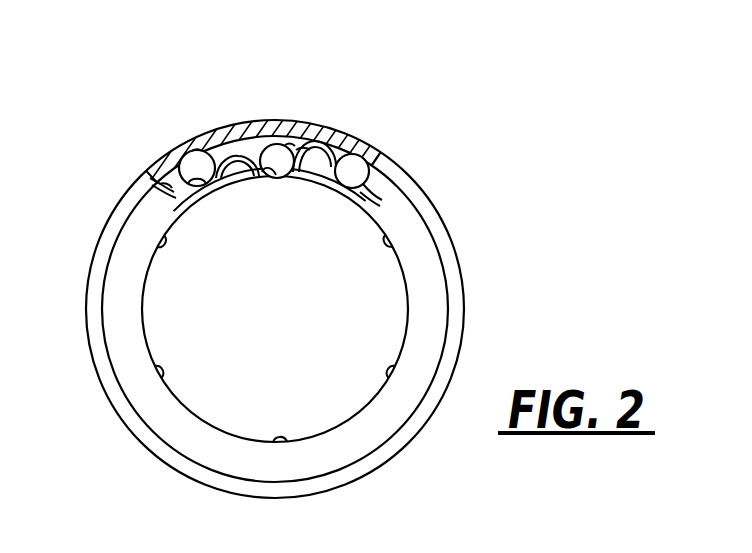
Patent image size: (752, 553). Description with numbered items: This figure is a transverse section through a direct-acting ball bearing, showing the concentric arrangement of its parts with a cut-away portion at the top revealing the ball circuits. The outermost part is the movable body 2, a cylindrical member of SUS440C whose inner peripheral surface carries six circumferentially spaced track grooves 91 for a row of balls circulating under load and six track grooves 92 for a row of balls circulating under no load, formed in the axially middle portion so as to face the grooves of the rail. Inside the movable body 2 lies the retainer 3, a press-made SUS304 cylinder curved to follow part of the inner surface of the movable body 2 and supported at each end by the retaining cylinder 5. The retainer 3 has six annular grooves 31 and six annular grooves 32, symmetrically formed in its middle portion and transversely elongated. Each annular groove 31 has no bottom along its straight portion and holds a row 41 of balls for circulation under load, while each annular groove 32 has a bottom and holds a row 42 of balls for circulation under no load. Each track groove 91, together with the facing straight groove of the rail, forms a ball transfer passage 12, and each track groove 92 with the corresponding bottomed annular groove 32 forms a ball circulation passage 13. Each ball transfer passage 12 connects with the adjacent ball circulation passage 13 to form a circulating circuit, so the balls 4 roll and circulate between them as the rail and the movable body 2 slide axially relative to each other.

The movable body 2 is at (243, 117).
The retainer 3 is at (266, 199).
The ball 4 is at (218, 106).
The row of balls for circulation under load 41 is at (277, 144).
The row of balls for circulation under no load 42 is at (180, 166).
The retaining cylinder 5 is at (128, 368).
The ball transfer passage 12 is at (300, 148).
The ball circulation passage 13 is at (165, 186).
The annular groove 31 is at (276, 179).
The annular groove 32 is at (212, 190).
The track groove 91 is at (290, 143).
The track groove 92 is at (197, 150).